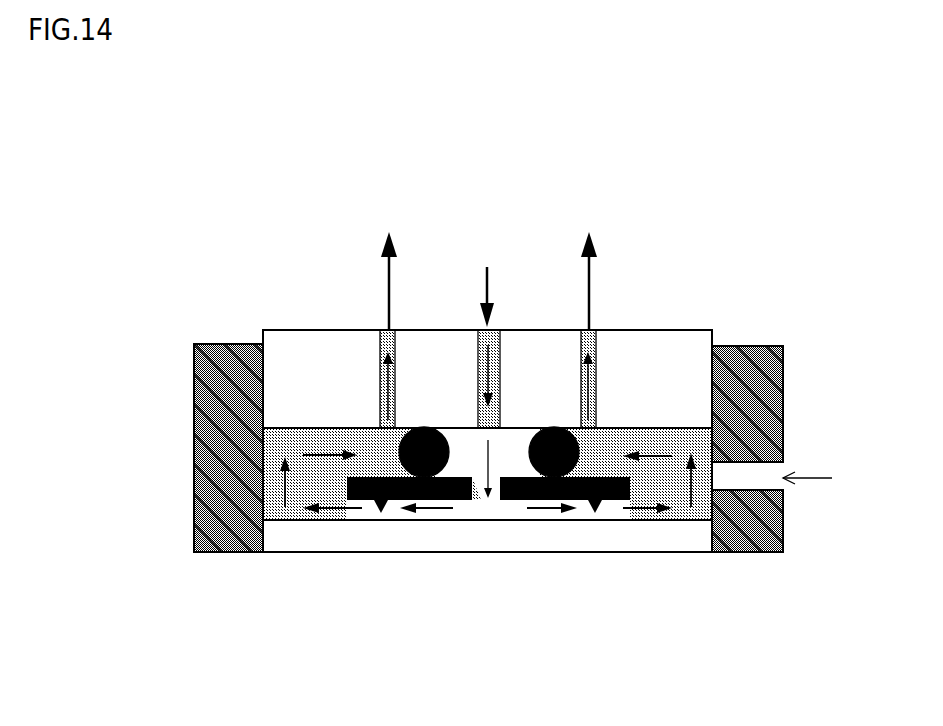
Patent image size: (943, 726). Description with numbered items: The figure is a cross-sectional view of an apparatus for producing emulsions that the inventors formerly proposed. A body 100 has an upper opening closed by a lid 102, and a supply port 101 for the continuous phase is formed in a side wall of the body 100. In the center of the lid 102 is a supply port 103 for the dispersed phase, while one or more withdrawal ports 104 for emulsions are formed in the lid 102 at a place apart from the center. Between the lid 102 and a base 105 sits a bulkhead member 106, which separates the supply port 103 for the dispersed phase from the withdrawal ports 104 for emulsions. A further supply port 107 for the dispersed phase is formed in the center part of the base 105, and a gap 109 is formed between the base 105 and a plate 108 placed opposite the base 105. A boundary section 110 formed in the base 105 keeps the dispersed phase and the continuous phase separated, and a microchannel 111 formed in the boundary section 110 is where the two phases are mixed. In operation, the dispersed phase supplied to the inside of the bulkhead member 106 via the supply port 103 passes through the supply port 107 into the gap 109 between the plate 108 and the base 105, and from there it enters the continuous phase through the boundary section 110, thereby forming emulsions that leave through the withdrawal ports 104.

The body 100 is at (193, 415).
The supply port for continuous phase 101 is at (762, 477).
The lid 102 is at (643, 353).
The supply port for dispersed phase 103 is at (478, 385).
The withdrawal port for emulsions 104 is at (380, 370).
The base 105 is at (538, 520).
The bulkhead member 106 is at (577, 437).
The supply port for dispersed phase 107 is at (486, 500).
The plate 108 is at (388, 537).
The gap 109 is at (448, 520).
The boundary section 110 is at (595, 517).
The microchannel 111 is at (380, 517).